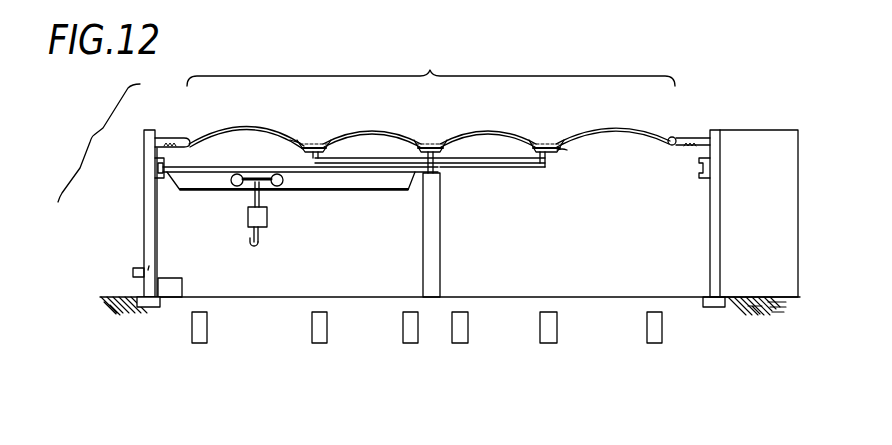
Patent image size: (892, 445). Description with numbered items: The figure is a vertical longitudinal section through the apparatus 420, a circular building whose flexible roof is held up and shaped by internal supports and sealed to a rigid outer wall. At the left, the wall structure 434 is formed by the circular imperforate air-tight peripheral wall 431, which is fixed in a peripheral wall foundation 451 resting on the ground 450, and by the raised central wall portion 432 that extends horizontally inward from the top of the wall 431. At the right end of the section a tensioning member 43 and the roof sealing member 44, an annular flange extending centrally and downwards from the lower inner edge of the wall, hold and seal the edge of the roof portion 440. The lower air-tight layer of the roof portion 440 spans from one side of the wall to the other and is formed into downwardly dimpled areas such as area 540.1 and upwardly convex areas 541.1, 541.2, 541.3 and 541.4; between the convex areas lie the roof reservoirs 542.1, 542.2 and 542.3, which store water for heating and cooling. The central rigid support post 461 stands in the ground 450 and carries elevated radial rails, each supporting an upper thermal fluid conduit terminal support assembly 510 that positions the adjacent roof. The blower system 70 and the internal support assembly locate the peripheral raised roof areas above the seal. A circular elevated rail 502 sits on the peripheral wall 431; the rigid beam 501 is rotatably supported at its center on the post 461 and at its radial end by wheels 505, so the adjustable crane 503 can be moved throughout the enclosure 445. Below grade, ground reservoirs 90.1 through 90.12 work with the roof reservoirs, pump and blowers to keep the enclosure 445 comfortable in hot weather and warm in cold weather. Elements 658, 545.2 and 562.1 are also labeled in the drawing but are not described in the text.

The wall structure 434 is at (95, 143).
The peripheral wall 431 is at (150, 210).
The raised central wall portion 432 is at (172, 140).
The wheels 505 is at (157, 177).
The fixture 658 is at (133, 273).
The blower system 70 is at (175, 283).
The roof portion 440 is at (431, 64).
The upwardly convex area 541.1 is at (257, 124).
The upwardly convex area 541.2 is at (369, 133).
The upwardly convex area 541.3 is at (488, 132).
The upwardly convex area 541.4 is at (615, 128).
The roof reservoir 542.1 is at (314, 140).
The roof reservoir 542.2 is at (481, 131).
The roof reservoir 542.3 is at (538, 148).
The frame beam 545.2 is at (428, 150).
The rail 562.1 is at (482, 167).
The upper thermal fluid conduit terminal support assembly 510 is at (557, 150).
The downwardly dimpled area 540.1 is at (298, 141).
The beam 501 is at (353, 182).
The adjustable crane 503 is at (268, 217).
The support post 461 is at (431, 258).
The enclosure 445 is at (607, 218).
The apparatus 420 is at (739, 155).
The tensioning member 43 is at (684, 145).
The roof sealing member 44 is at (673, 138).
The circular elevated rail 502 is at (698, 177).
The peripheral wall foundation 451 is at (713, 297).
The ground 450 is at (732, 294).
The ground reservoir 90.1 is at (197, 338).
The ground reservoir 90.12 is at (652, 330).